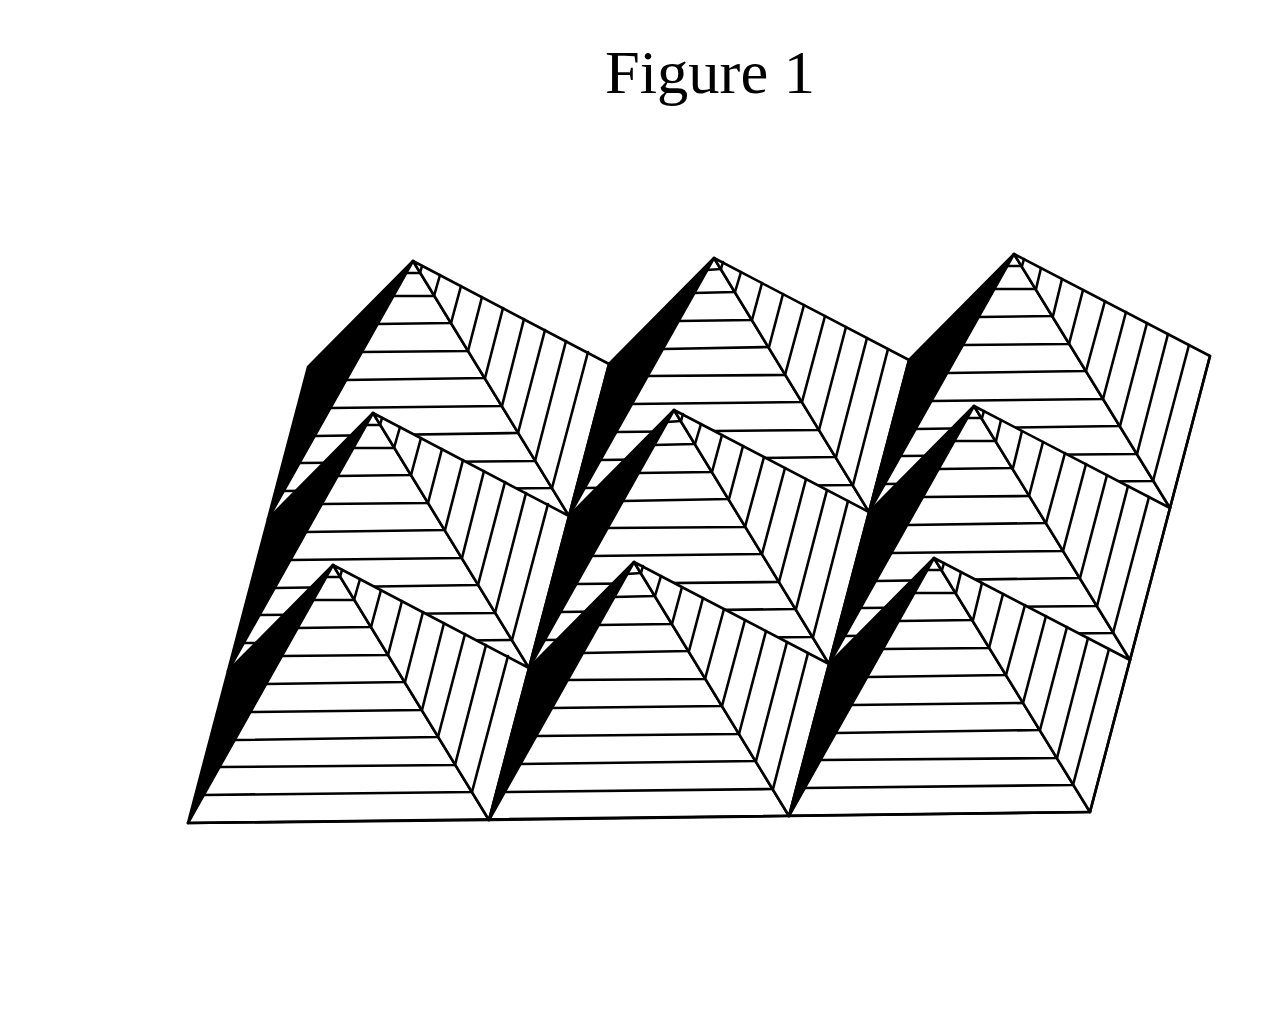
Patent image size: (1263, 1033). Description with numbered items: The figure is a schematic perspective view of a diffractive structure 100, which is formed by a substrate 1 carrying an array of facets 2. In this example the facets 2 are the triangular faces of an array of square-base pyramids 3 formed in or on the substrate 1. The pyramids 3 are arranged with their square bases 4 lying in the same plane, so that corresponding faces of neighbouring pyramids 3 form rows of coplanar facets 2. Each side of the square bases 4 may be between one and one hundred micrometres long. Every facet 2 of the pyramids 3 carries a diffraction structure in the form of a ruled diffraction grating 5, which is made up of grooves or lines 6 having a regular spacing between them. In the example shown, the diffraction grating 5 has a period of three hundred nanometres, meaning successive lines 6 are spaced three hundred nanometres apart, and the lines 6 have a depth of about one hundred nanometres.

The diffractive structure 100 is at (704, 511).
The substrate 1 is at (1150, 594).
The facets 2 is at (836, 334).
The square-base pyramids 3 is at (710, 247).
The square bases 4 is at (893, 813).
The ruled diffraction grating 5 is at (348, 810).
The grooves or lines 6 is at (740, 786).